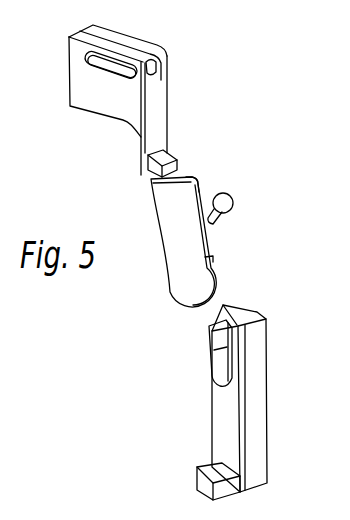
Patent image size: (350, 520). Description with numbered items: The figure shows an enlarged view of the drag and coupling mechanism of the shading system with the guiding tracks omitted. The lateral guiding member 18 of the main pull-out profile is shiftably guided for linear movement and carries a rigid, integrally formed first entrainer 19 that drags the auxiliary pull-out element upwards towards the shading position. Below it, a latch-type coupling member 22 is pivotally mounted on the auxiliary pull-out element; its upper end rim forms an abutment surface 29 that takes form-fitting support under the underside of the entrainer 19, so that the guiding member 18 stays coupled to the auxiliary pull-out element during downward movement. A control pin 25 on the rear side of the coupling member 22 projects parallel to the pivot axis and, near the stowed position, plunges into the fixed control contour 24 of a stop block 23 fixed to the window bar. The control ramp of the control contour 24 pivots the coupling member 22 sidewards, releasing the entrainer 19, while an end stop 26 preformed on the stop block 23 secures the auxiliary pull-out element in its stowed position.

The guiding member 18 is at (98, 95).
The first entrainer 19 is at (164, 162).
The coupling member 22 is at (180, 245).
The stop block 23 is at (258, 412).
The control contour 24 is at (217, 348).
The control pin 25 is at (218, 191).
The end stop 26 is at (212, 469).
The abutment surface 29 is at (194, 176).